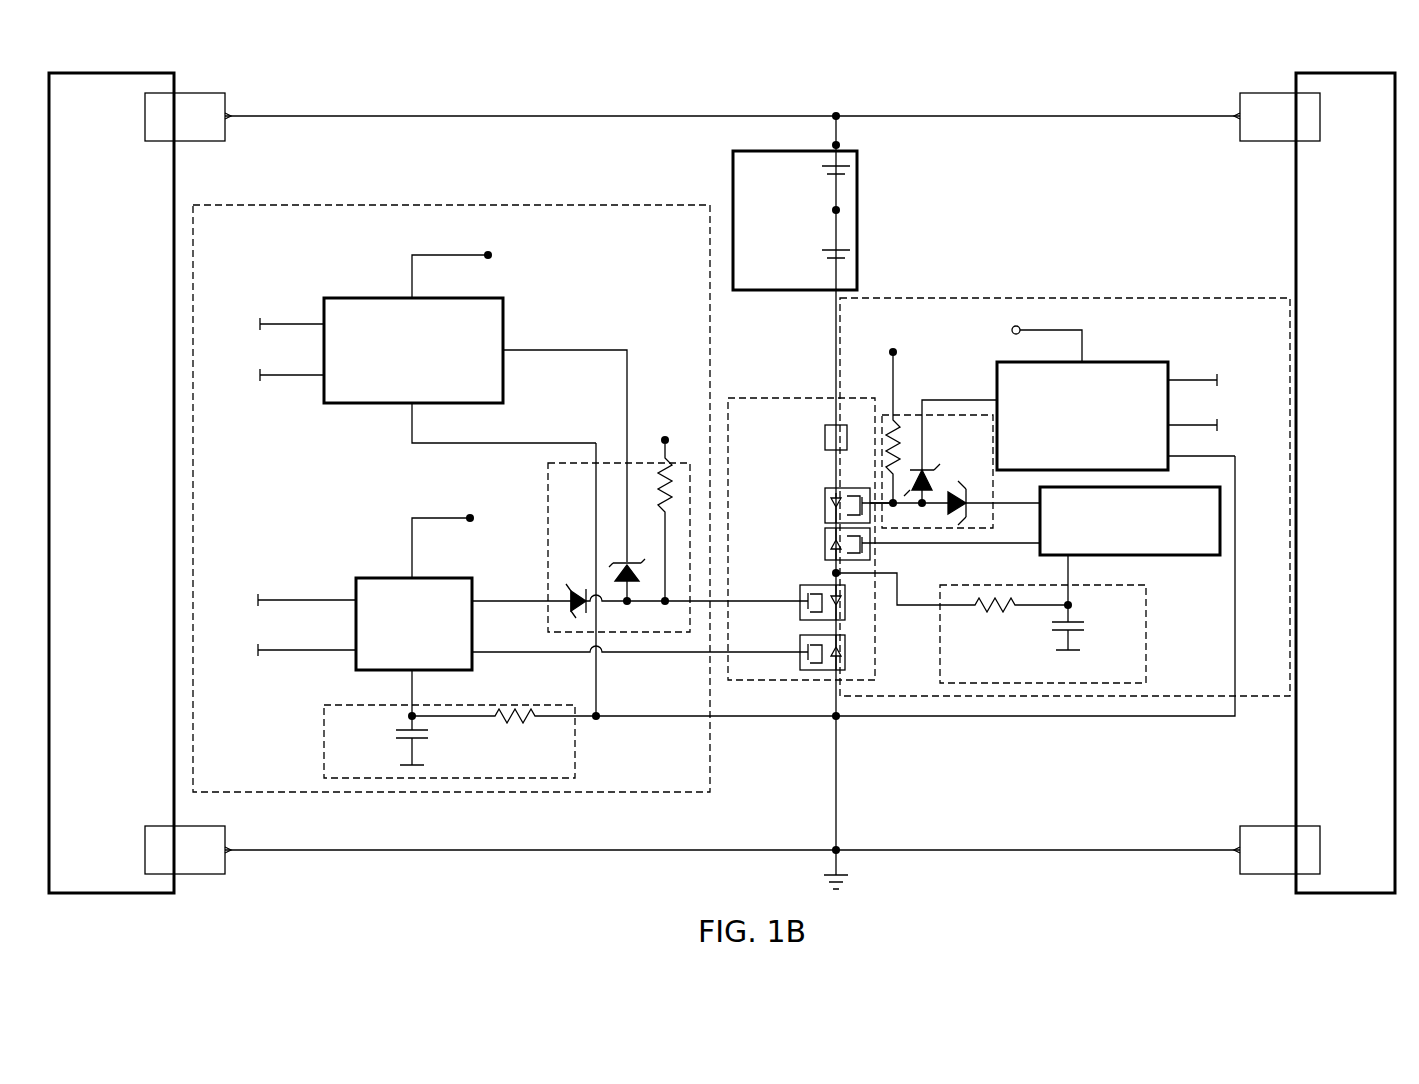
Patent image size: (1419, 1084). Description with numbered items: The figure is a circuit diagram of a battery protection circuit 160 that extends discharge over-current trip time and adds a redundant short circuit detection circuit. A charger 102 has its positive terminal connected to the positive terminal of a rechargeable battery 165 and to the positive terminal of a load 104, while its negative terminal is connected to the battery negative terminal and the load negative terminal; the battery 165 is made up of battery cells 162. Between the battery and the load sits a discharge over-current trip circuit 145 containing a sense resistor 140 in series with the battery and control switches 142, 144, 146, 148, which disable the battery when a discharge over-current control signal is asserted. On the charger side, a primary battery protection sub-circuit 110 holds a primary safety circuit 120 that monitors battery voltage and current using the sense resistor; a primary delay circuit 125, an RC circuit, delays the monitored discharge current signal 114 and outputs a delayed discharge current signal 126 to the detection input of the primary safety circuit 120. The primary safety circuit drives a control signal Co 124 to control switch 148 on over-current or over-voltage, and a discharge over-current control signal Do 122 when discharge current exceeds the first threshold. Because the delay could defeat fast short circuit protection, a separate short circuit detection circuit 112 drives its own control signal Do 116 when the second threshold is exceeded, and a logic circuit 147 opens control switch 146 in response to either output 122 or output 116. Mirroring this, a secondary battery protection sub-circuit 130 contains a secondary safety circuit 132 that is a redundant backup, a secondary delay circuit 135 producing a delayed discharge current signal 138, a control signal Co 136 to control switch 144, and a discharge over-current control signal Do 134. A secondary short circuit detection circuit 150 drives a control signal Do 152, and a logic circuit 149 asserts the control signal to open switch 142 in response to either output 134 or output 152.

The charger 102 is at (178, 158).
The load 104 is at (1295, 220).
The primary battery protection sub-circuit 110 is at (452, 205).
The short circuit detection circuit 112 is at (354, 298).
The monitored discharge current signal 114 is at (557, 442).
The discharge over-current control signal Do 116 is at (615, 350).
The primary safety circuit 120 is at (386, 576).
The discharge over-current control signal Do 122 is at (533, 599).
The control signal Co 124 is at (536, 654).
The primary delay circuit 125 is at (575, 752).
The delayed discharge current signal 126 is at (412, 705).
The secondary battery protection sub-circuit 130 is at (1130, 298).
The secondary safety circuit 132 is at (1220, 521).
The discharge over-current control signal Do 134 is at (957, 498).
The secondary delay circuit 135 is at (1146, 633).
The control signal Co 136 is at (975, 546).
The delayed discharge current signal 138 is at (1070, 562).
The sense resistor 140 is at (825, 438).
The control switch 142 is at (825, 506).
The control switch 144 is at (825, 546).
The discharge over-current trip circuit 145 is at (795, 398).
The control switch 146 is at (800, 592).
The logic circuit 147 is at (548, 483).
The control switch 148 is at (800, 647).
The logic circuit 149 is at (882, 485).
The secondary short circuit detection circuit 150 is at (1113, 362).
The discharge over-current control signal Do 152 is at (938, 414).
The battery protection circuit 160 is at (305, 98).
The battery cells 162 is at (857, 170).
The rechargeable battery 165 is at (733, 176).